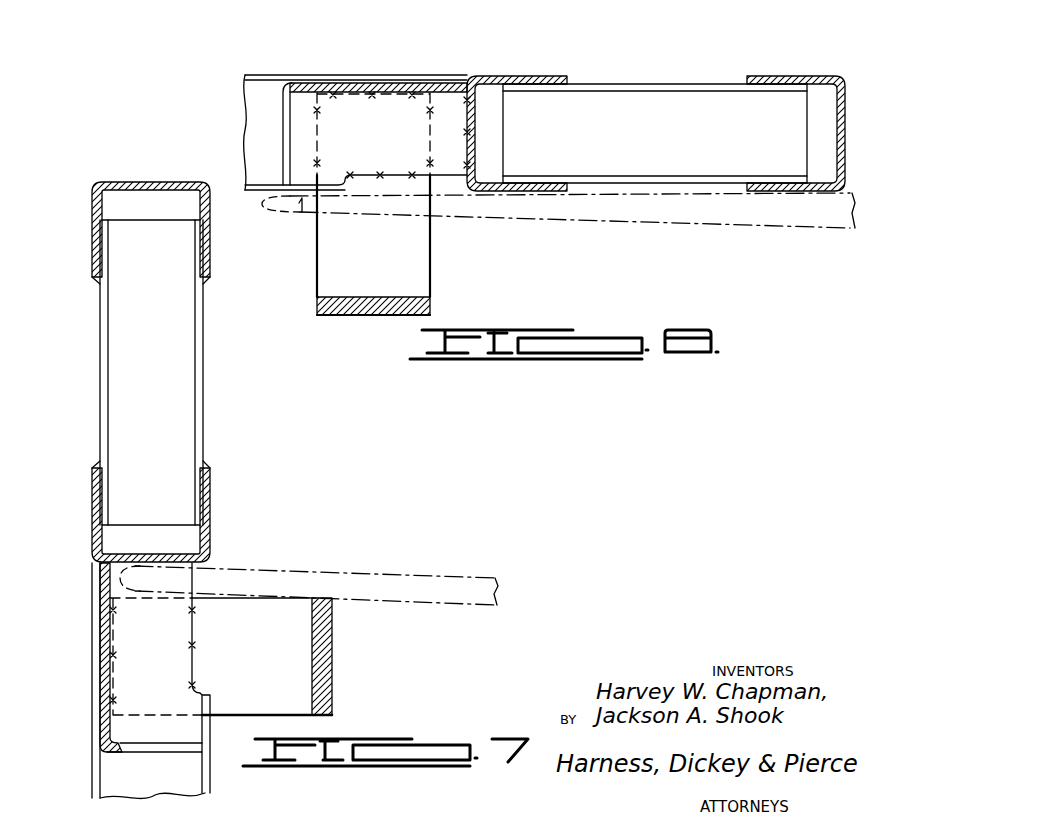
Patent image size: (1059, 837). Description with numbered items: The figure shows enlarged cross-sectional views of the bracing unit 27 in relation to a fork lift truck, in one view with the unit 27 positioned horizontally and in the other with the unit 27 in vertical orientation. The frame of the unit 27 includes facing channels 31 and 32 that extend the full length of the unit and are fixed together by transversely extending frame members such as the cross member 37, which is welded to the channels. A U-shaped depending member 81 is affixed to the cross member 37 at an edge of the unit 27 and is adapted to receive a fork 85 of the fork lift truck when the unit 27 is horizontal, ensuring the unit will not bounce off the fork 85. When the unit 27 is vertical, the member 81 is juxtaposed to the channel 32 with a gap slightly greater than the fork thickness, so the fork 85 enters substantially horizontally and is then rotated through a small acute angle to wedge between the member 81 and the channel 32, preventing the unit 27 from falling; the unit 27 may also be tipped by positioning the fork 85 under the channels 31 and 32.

In FIG. 6, the bracing unit 27 is at (487, 198).
In FIG. 7, the bracing unit 27 is at (208, 412).
In FIG. 6, the channel 31 is at (778, 78).
In FIG. 7, the channel 31 is at (122, 182).
In FIG. 6, the channel 32 is at (498, 78).
In FIG. 7, the channel 32 is at (208, 530).
In FIG. 6, the transversely extending frame member 37 is at (362, 80).
In FIG. 7, the transversely extending frame member 37 is at (92, 630).
In FIG. 6, the U-shaped depending member 81 is at (337, 312).
In FIG. 7, the U-shaped depending member 81 is at (325, 640).
In FIG. 6, the fork 85 is at (578, 215).
In FIG. 7, the fork 85 is at (280, 578).